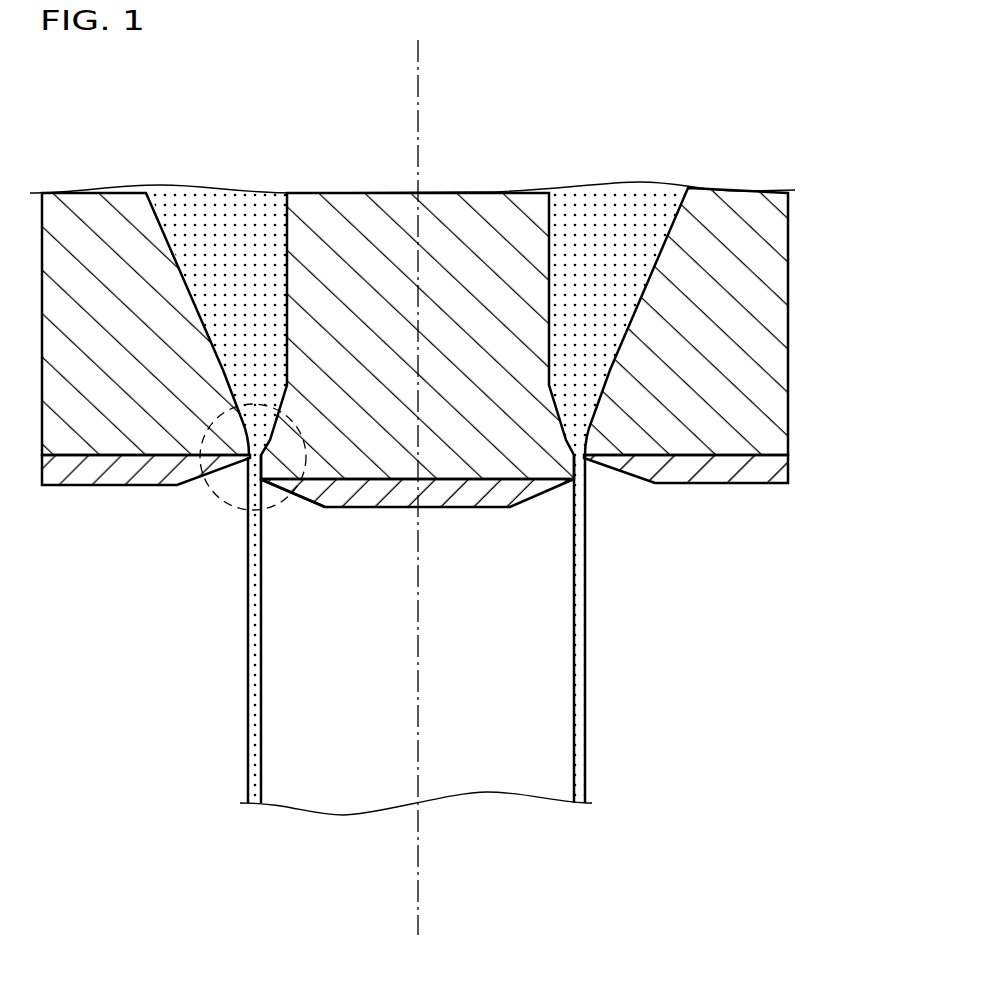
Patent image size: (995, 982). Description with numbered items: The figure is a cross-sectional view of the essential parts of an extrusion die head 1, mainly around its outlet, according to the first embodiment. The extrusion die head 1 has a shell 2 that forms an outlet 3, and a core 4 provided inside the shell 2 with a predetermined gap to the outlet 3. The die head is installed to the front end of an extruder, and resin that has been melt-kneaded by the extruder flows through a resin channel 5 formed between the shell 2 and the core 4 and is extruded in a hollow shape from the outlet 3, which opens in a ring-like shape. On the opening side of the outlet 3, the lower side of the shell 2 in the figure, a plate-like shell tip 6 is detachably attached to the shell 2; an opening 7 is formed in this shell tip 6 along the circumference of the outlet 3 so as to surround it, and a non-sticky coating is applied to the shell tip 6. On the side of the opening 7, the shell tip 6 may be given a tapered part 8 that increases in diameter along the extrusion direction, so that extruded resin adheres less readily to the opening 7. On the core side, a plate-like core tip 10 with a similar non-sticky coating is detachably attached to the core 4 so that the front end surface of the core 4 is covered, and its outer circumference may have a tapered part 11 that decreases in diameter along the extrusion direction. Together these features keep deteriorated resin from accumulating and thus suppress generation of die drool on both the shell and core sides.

The extrusion die head 1 is at (458, 445).
The shell 2 is at (752, 385).
The outlet 3 is at (583, 463).
The core 4 is at (495, 212).
The resin channel 5 is at (612, 212).
The shell tip 6 is at (713, 470).
The opening 7 is at (239, 472).
The tapered part 8 is at (195, 482).
The core tip 10 is at (482, 492).
The tapered part 11 is at (298, 500).